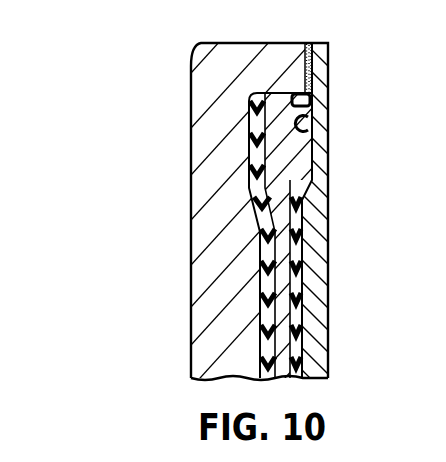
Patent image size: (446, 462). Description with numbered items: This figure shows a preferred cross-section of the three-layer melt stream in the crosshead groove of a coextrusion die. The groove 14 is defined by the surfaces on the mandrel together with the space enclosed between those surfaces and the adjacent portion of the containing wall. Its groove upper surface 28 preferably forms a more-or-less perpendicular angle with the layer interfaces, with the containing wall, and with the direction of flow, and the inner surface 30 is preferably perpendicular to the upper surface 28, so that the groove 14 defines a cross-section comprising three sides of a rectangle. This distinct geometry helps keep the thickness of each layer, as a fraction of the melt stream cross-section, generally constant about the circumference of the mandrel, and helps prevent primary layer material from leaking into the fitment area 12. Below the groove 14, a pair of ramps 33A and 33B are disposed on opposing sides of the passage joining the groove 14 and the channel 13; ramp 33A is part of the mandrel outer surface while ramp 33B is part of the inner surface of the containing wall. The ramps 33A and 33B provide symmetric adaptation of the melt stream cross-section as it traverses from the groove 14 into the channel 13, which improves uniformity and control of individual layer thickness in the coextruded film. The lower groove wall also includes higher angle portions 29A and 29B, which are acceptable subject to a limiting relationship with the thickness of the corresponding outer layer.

The fitment area 12 is at (312, 62).
The channel 13 is at (292, 298).
The groove 14 is at (297, 133).
The groove upper surface 28 is at (310, 97).
The inner surface 30 is at (303, 158).
The higher angle portion of lower groove wall 29A is at (255, 206).
The higher angle portion of lower groove wall 29B is at (311, 193).
The ramp 33A is at (262, 219).
The ramp 33B is at (322, 208).